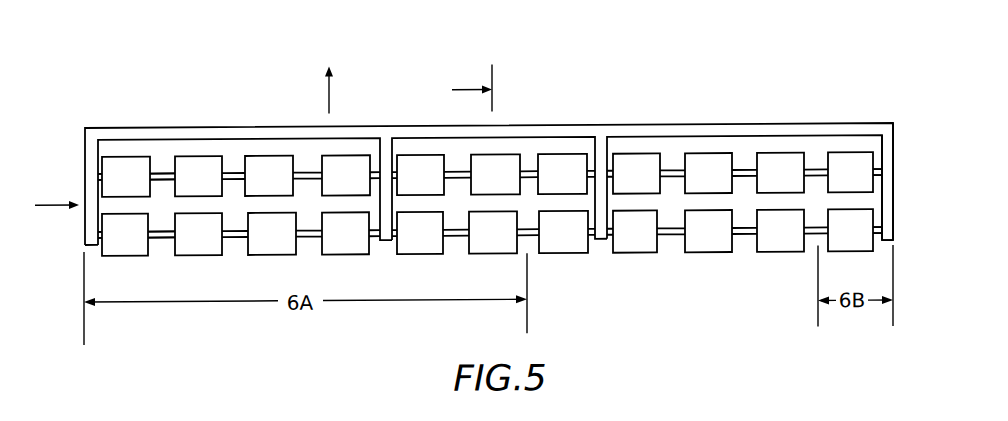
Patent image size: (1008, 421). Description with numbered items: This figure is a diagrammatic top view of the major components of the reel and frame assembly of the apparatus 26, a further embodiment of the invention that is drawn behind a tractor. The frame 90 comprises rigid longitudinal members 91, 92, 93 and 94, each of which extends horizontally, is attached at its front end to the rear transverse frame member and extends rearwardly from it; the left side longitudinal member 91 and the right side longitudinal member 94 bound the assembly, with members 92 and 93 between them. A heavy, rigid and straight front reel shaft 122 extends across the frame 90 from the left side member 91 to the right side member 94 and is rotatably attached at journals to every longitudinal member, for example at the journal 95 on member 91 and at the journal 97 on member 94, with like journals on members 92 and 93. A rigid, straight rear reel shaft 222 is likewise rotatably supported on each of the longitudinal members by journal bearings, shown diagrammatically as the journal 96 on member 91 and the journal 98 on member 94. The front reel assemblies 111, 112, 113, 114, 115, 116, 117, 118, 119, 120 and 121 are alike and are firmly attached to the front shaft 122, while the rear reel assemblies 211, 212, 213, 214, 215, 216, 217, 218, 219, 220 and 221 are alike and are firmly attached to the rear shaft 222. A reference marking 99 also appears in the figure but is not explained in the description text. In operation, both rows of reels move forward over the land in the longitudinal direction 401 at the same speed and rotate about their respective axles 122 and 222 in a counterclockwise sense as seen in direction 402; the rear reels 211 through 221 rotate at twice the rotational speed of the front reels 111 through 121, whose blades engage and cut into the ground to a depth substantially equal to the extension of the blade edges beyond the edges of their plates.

The apparatus 26 is at (263, 108).
The frame 90 is at (242, 128).
The left side longitudinal member 91 is at (92, 146).
The longitudinal member 92 is at (386, 154).
The longitudinal member 93 is at (604, 157).
The right side longitudinal member 94 is at (892, 160).
The journal 95 is at (101, 174).
The journal bearing 96 is at (99, 234).
The journal 97 is at (882, 175).
The journal 98 is at (882, 233).
The flow direction arrow 99 is at (472, 87).
The forward direction 401 is at (346, 89).
The viewing direction 402 is at (57, 195).
The front reel shaft 122 is at (166, 174).
The rear reel shaft 222 is at (168, 239).
The front reel assembly 111 is at (126, 177).
The front reel assembly 112 is at (198, 176).
The front reel assembly 113 is at (269, 176).
The front reel assembly 114 is at (346, 175).
The front reel assembly 115 is at (420, 175).
The front reel assembly 116 is at (495, 174).
The front reel assembly 117 is at (562, 174).
The front reel assembly 118 is at (636, 173).
The front reel assembly 119 is at (708, 173).
The front reel assembly 120 is at (780, 173).
The front reel assembly 121 is at (850, 172).
The rear reel assembly 211 is at (125, 235).
The rear reel assembly 212 is at (198, 234).
The rear reel assembly 213 is at (272, 234).
The rear reel assembly 214 is at (345, 233).
The rear reel assembly 215 is at (420, 233).
The rear reel assembly 216 is at (493, 232).
The rear reel assembly 217 is at (563, 232).
The rear reel assembly 218 is at (635, 231).
The rear reel assembly 219 is at (708, 231).
The rear reel assembly 220 is at (780, 231).
The rear reel assembly 221 is at (850, 230).